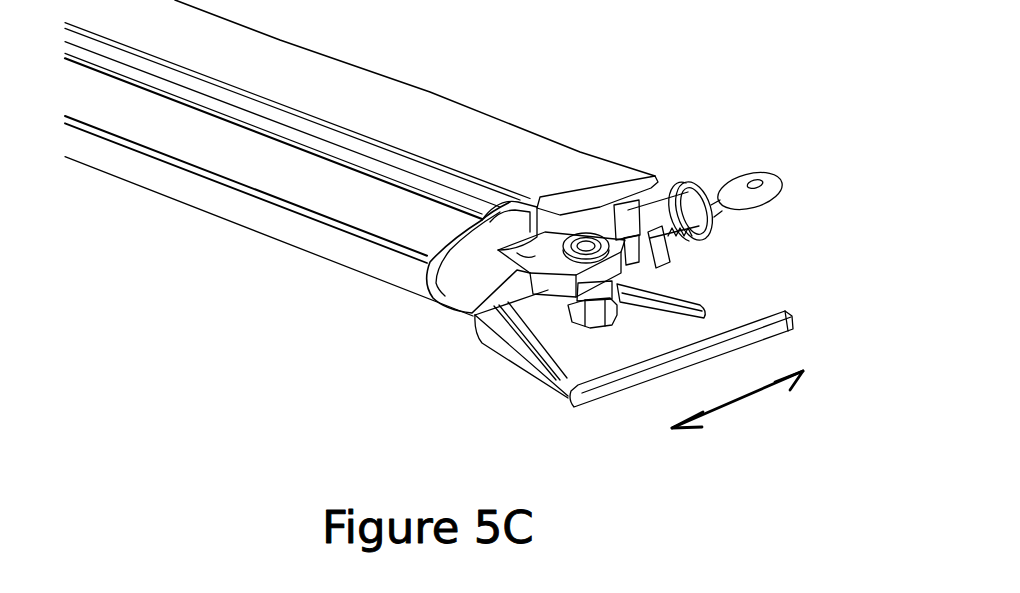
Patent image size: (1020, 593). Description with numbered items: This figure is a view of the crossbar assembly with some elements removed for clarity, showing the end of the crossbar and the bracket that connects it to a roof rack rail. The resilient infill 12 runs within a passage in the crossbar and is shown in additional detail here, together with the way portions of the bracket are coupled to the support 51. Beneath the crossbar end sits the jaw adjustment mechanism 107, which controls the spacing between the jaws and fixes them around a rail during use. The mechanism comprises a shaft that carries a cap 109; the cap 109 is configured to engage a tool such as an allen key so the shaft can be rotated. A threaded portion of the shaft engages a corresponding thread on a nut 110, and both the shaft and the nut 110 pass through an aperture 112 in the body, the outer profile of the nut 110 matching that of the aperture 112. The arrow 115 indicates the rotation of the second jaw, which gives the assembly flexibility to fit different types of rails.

The resilient infill 12 is at (435, 172).
The support 51 is at (441, 282).
The jaw adjustment mechanism 107 is at (625, 287).
The cap 109 is at (603, 230).
The nut 110 is at (577, 318).
The aperture 112 is at (600, 328).
The arrow 115 is at (737, 399).